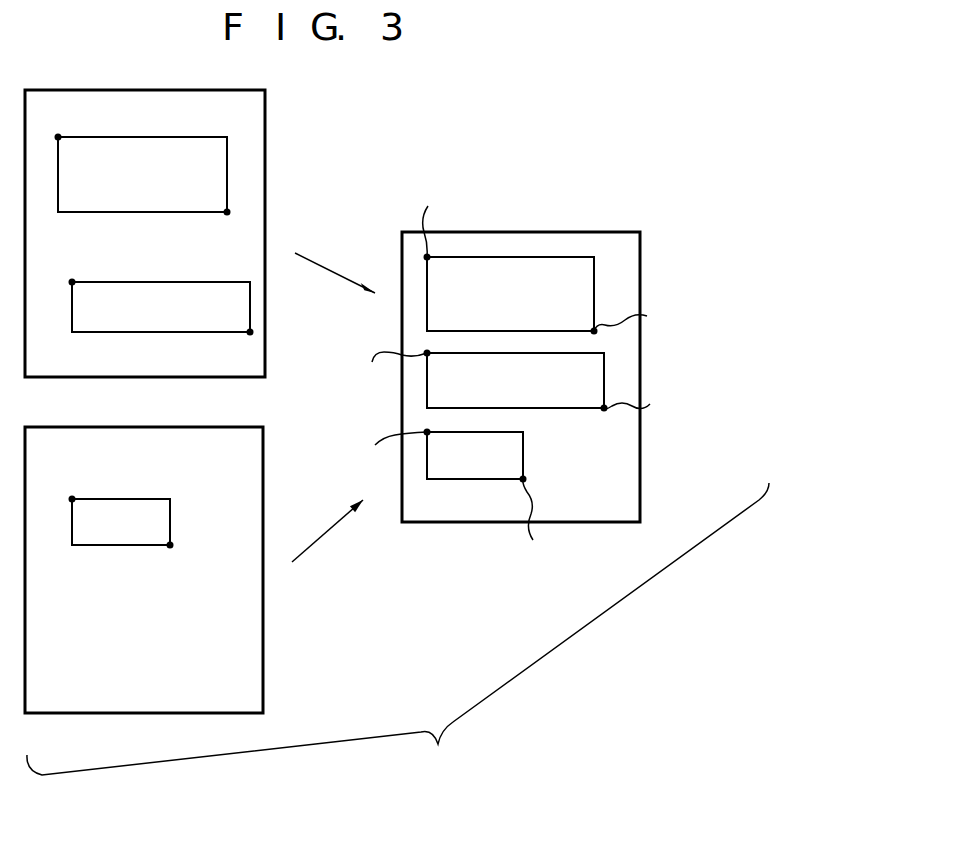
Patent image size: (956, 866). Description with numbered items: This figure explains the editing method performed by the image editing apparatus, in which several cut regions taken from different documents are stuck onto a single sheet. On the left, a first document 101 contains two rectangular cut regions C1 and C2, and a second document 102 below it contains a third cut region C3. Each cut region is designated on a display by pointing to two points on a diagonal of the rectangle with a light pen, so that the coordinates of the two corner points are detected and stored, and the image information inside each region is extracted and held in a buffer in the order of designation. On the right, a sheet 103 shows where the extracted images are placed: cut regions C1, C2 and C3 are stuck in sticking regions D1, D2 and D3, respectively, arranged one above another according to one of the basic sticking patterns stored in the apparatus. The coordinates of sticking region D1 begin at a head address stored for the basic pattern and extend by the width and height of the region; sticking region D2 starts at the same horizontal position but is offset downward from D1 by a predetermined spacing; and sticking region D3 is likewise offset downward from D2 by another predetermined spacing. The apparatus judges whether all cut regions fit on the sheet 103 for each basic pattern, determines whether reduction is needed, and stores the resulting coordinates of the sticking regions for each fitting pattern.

The first document 101 is at (198, 89).
The second document 102 is at (92, 427).
The sheet 103 is at (640, 258).
The cut region C1 is at (162, 157).
The cut region C2 is at (214, 292).
The cut region C3 is at (172, 521).
The sticking region D1 is at (574, 257).
The sticking region D2 is at (570, 353).
The sticking region D3 is at (523, 448).